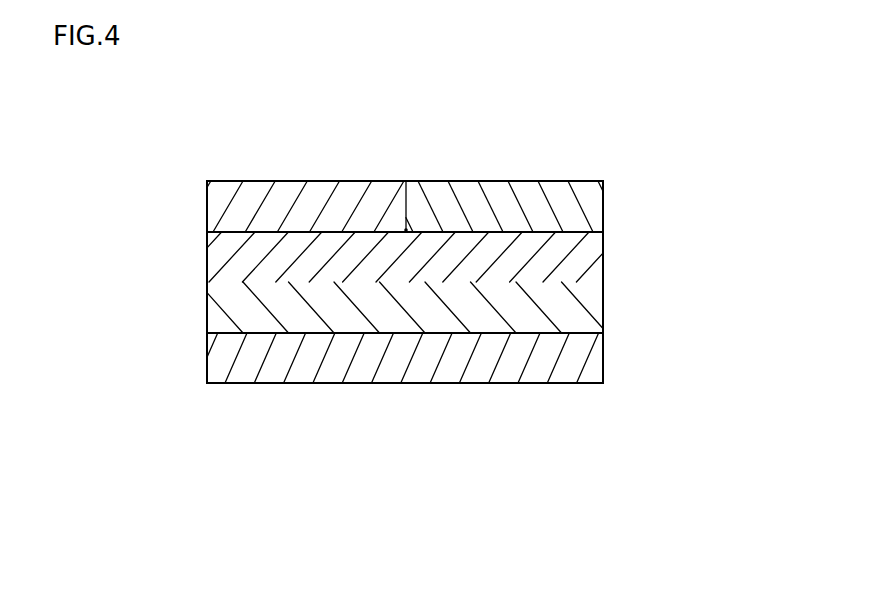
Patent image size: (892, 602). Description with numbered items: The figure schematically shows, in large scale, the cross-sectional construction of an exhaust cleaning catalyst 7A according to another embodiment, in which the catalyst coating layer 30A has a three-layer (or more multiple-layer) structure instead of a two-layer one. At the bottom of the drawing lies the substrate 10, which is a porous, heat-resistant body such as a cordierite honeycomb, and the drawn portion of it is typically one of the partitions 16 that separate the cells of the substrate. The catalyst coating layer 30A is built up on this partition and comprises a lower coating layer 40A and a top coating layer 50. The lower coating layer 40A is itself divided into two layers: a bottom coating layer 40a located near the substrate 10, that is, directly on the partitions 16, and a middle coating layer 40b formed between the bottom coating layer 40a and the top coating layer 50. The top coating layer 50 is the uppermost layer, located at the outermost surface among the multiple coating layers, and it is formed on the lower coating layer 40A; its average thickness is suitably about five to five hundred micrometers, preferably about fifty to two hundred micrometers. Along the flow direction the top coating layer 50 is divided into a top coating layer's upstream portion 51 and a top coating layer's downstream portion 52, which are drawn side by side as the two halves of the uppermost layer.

The exhaust cleaning catalyst 7A is at (452, 137).
The catalyst coating layer 30A is at (734, 131).
The substrate 10 is at (380, 389).
The partitions 16 is at (520, 384).
The lower coating layer 40A is at (708, 243).
The bottom coating layer 40a is at (604, 311).
The middle coating layer 40b is at (604, 264).
The top coating layer 50 is at (615, 210).
The top coating layer's upstream portion 51 is at (207, 221).
The top coating layer's downstream portion 52 is at (540, 186).